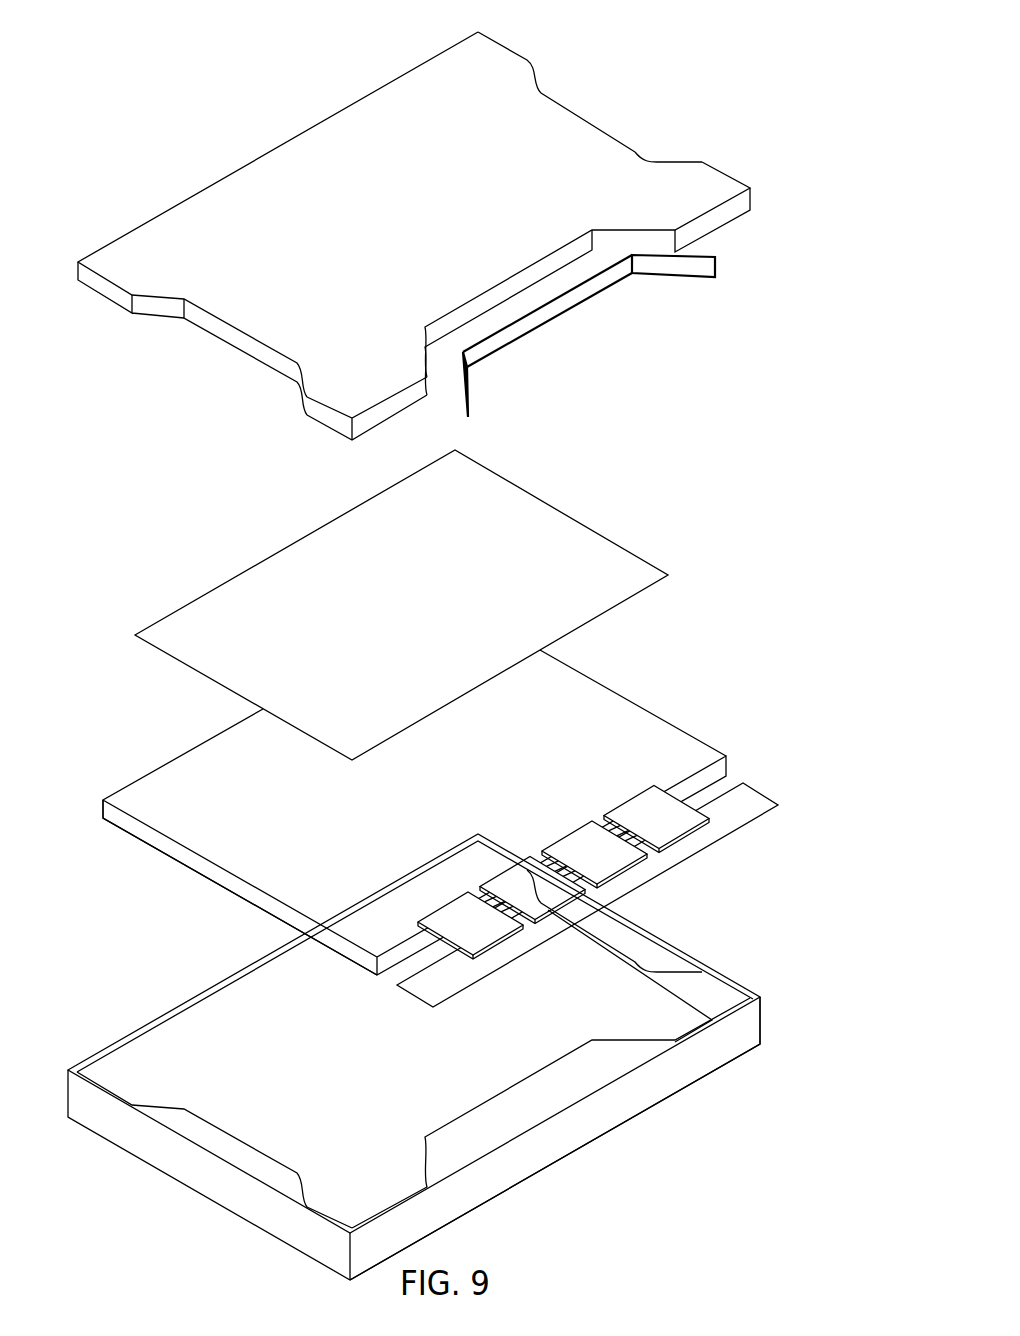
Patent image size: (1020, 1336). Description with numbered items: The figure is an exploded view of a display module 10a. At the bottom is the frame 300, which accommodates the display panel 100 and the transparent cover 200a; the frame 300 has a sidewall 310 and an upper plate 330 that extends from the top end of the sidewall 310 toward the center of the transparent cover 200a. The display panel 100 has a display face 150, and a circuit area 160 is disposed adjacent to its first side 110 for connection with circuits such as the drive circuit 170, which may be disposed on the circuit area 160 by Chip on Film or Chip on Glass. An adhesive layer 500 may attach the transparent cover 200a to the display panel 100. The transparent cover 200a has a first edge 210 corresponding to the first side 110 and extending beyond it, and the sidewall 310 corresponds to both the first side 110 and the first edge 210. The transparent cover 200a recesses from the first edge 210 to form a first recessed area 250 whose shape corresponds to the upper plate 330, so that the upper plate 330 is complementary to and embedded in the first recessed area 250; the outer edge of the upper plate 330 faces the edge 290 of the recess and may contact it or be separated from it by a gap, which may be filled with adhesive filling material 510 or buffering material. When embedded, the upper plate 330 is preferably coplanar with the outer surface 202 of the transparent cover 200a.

The electronic device 10a is at (145, 108).
The transparent cover 200a is at (414, 252).
The outer surface 202 is at (637, 158).
The first edge 210 is at (353, 441).
The adhesive filling material 510 is at (632, 325).
The first recessed area 250 is at (573, 275).
The edge 290 is at (513, 290).
The adhesive layer 500 is at (168, 615).
The display panel 100 is at (426, 843).
The display face 150 is at (142, 789).
The first side 110 is at (387, 960).
The circuit area 160 is at (603, 818).
The drive circuit 170 is at (493, 933).
The frame 300 is at (424, 1057).
The sidewall 310 is at (622, 1217).
The upper plate 330 is at (543, 1102).